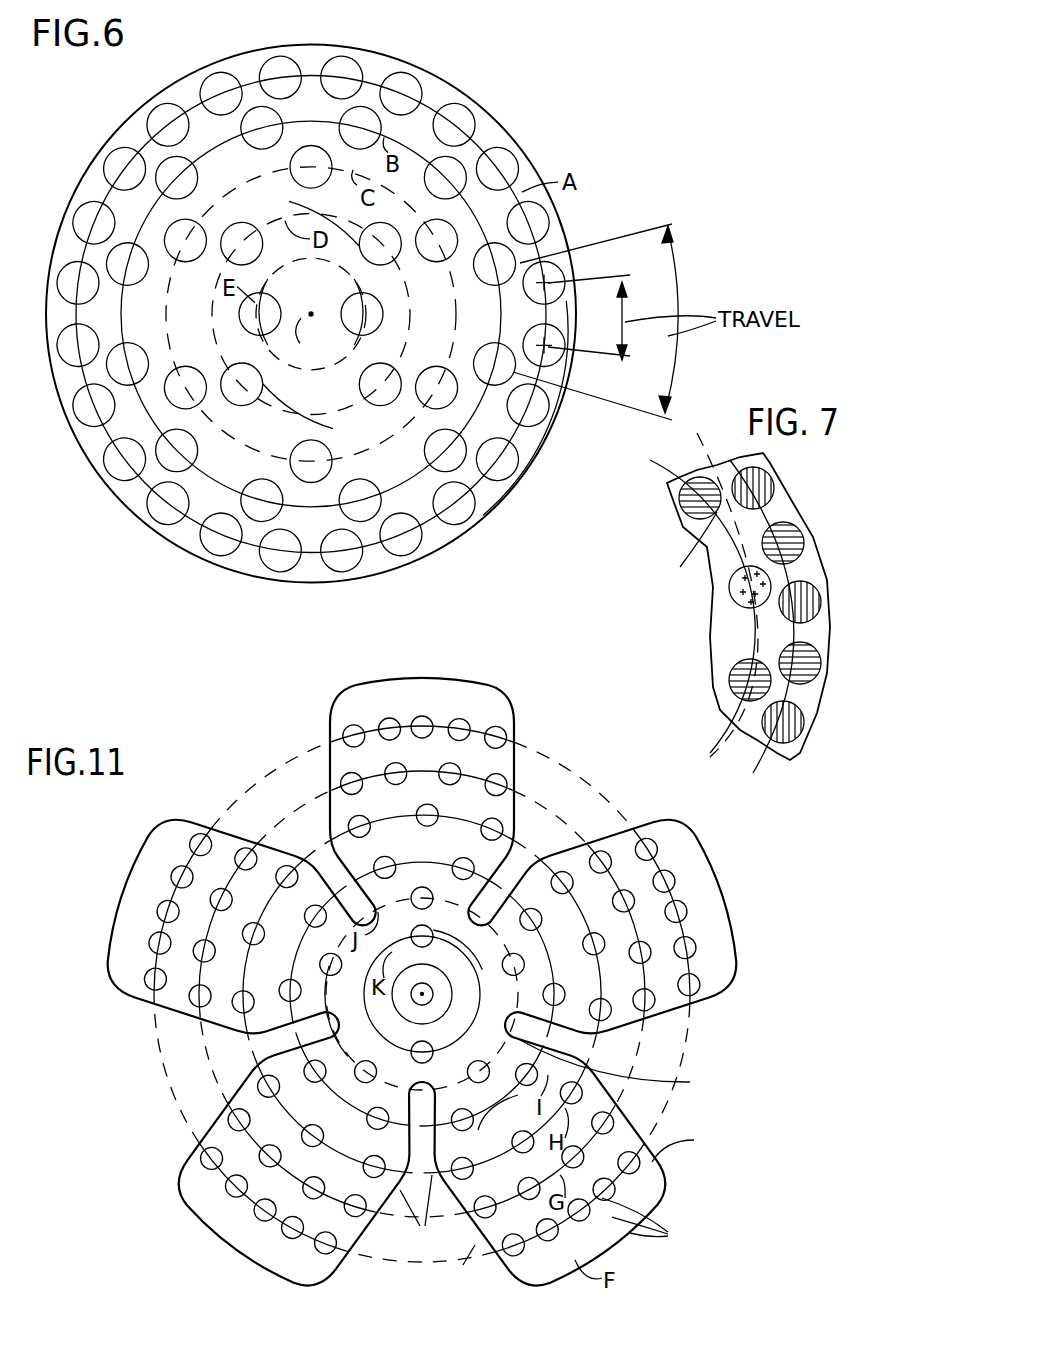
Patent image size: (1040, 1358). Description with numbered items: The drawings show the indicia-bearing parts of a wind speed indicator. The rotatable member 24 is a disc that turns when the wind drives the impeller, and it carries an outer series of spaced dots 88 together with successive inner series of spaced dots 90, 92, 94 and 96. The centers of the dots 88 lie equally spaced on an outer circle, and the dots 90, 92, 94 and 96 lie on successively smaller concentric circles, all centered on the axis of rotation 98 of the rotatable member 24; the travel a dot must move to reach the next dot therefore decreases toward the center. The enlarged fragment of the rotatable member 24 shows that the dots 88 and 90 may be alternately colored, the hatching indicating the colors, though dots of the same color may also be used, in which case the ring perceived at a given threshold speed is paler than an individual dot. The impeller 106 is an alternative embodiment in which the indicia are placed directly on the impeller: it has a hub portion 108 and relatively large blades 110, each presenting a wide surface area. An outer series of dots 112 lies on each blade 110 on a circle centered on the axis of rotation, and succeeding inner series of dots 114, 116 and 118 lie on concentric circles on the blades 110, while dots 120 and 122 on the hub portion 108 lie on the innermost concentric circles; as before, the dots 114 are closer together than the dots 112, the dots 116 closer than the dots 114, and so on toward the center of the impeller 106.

In FIG. 6, the rotatable member 24 is at (505, 127).
In FIG. 7, the rotatable member 24 is at (837, 638).
In FIG. 6, the outer series of spaced dots 88 is at (124, 152).
In FIG. 7, the outer series of spaced dots 88 is at (812, 588).
In FIG. 6, the spaced dots 90 is at (131, 298).
In FIG. 7, the spaced dots 90 is at (724, 590).
In FIG. 6, the spaced dots 92 is at (177, 272).
In FIG. 6, the spaced dots 94 is at (258, 226).
In FIG. 6, the spaced dots 96 is at (310, 313).
In FIG. 6, the axis of rotation 98 is at (312, 341).
In FIG. 11, the impeller 106 is at (755, 935).
In FIG. 11, the hub portion 108 is at (622, 1069).
In FIG. 11, the blades 110 is at (687, 1143).
In FIG. 11, the outer series of dots 112 is at (650, 1226).
In FIG. 11, the dots 114 is at (455, 1271).
In FIG. 11, the dots 116 is at (418, 1214).
In FIG. 11, the dots 118 is at (492, 1126).
In FIG. 11, the dots 120 is at (362, 1061).
In FIG. 11, the dots 122 is at (484, 1001).